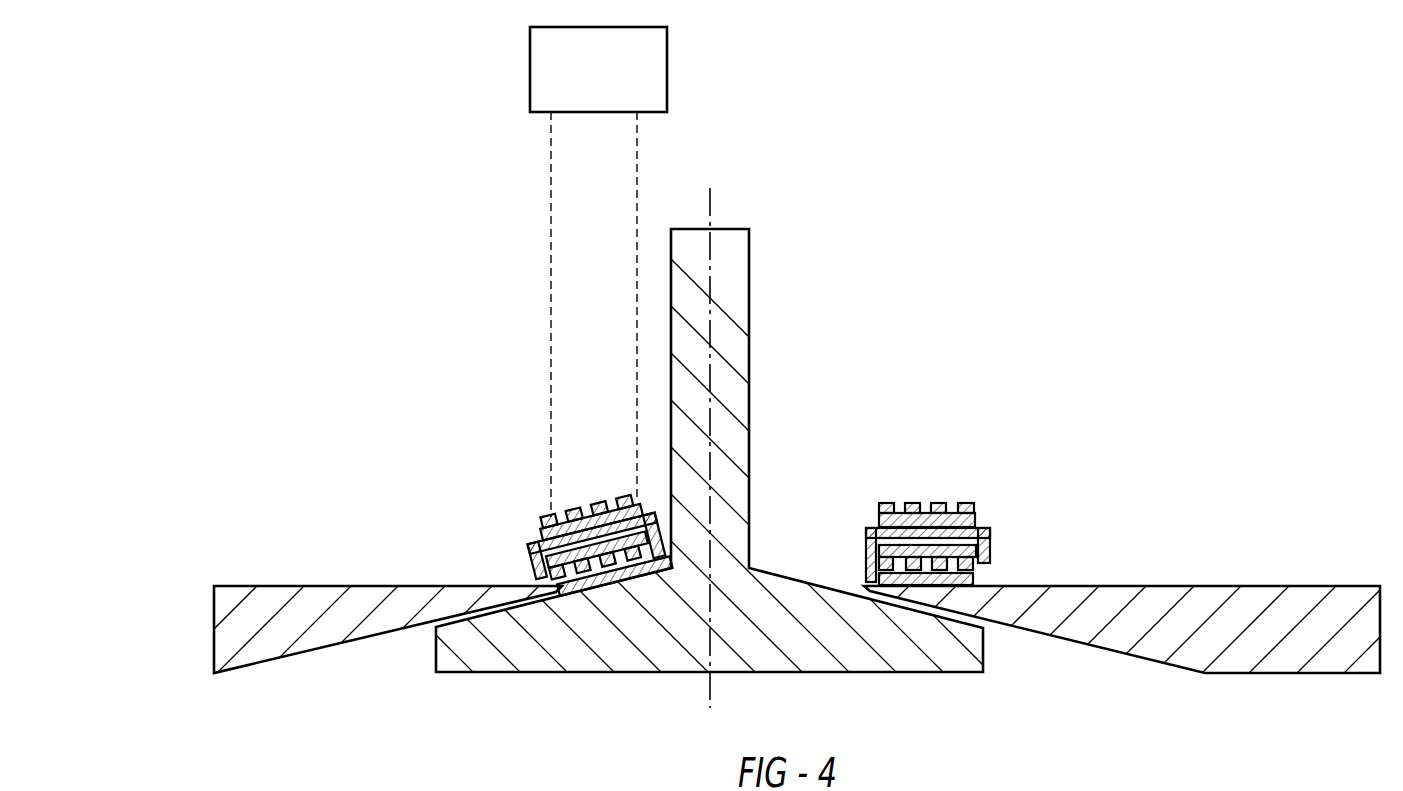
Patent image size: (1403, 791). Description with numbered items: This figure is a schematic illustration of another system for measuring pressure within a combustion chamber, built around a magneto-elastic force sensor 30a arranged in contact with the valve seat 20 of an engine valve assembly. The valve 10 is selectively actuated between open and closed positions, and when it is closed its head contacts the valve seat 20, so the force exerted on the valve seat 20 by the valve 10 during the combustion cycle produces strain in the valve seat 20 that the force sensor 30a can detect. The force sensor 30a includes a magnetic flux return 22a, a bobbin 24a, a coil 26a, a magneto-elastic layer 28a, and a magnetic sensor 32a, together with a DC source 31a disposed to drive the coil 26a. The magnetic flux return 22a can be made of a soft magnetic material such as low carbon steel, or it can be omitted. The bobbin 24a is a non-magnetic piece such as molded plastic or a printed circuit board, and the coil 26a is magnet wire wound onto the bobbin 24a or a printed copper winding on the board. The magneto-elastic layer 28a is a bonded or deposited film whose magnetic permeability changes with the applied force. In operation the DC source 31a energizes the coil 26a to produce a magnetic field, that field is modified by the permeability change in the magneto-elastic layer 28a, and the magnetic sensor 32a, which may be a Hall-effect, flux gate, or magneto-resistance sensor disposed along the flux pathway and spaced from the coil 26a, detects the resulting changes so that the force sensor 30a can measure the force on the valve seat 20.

The valve 10 is at (905, 647).
The valve seat 20 is at (1252, 652).
The magnetic flux return 22a is at (898, 521).
The bobbin 24a is at (962, 546).
The coil 26a is at (976, 556).
The magneto-elastic layer 28a is at (973, 577).
The force sensor 30a is at (758, 453).
The DC source 31a is at (648, 79).
The magnetic sensor 32a is at (975, 558).